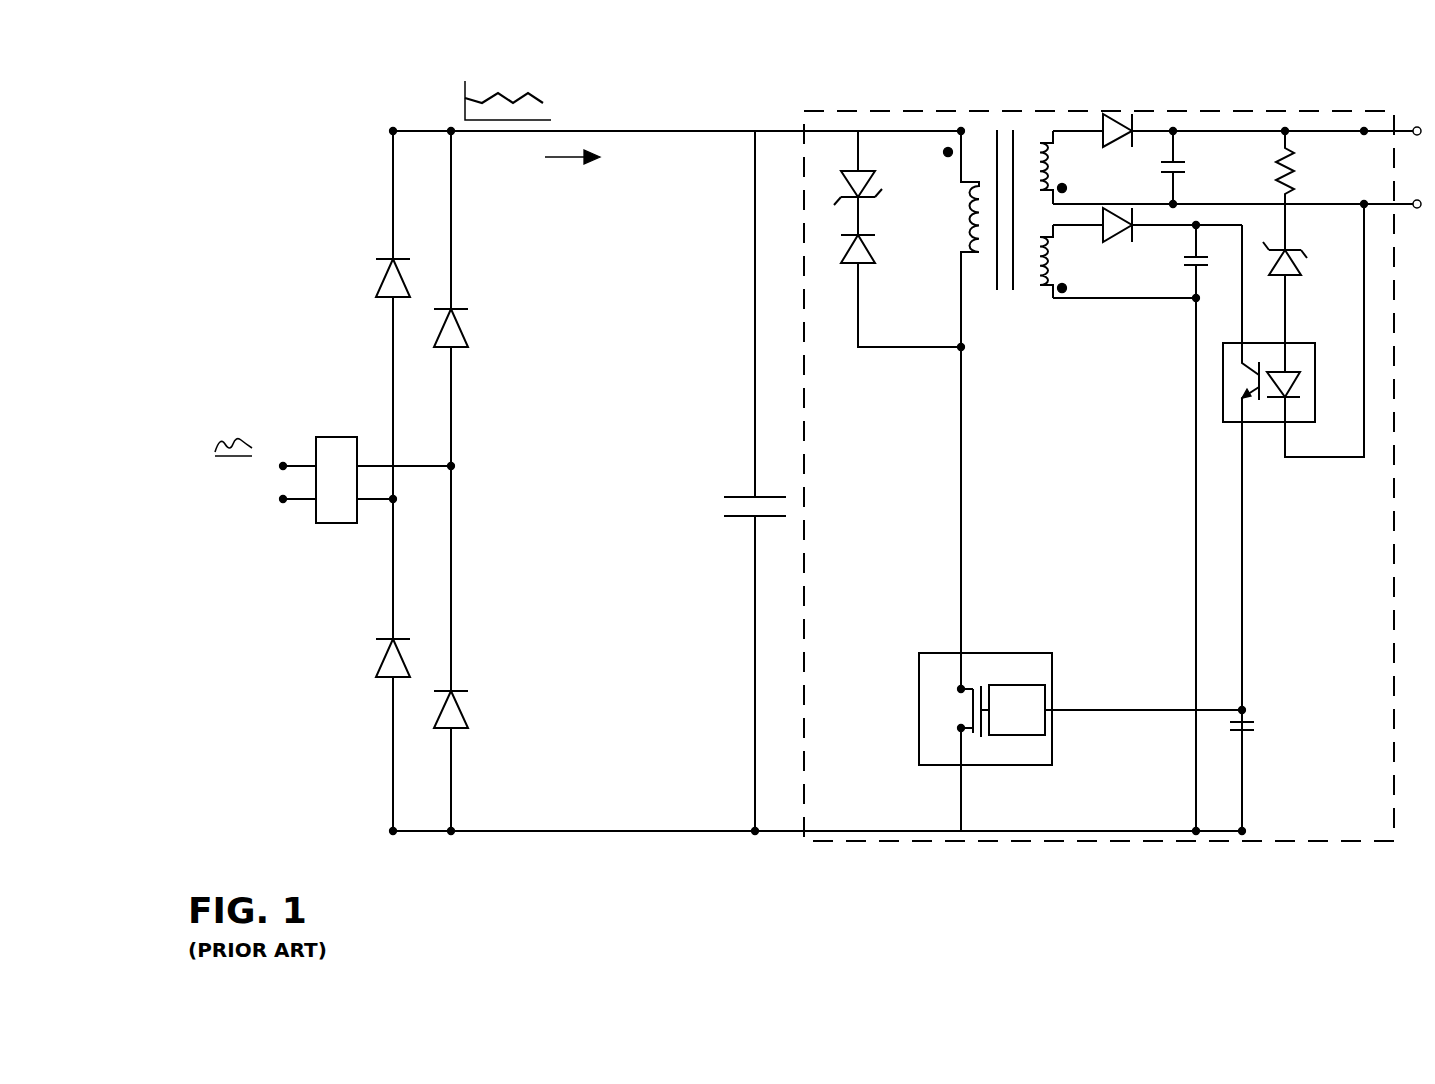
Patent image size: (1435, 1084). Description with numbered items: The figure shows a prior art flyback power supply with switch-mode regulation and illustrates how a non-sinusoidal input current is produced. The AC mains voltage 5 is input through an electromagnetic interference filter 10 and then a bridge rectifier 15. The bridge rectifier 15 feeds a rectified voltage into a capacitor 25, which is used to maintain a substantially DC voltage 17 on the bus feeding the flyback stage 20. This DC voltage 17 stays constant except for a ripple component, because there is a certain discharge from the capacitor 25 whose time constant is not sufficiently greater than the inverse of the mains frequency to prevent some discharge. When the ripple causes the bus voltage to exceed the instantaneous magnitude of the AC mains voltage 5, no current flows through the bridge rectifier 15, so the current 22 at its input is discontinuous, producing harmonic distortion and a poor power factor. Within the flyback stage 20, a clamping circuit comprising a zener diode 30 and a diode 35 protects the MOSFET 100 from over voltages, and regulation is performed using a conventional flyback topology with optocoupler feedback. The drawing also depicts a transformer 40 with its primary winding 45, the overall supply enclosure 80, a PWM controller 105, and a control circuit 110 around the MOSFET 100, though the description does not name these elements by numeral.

The AC mains voltage 5 is at (265, 456).
The electromagnetic interference (EMI) filter 10 is at (385, 480).
The bridge rectifier 15 is at (378, 860).
The DC voltage 17 is at (493, 96).
The flyback stage 20 is at (1355, 857).
The current 22 is at (572, 175).
The capacitor 25 is at (732, 481).
The zener diode 30 is at (845, 183).
The diode 35 is at (886, 293).
The transformer 40 is at (996, 386).
The primary winding 45 is at (952, 410).
The switching power supply 80 is at (1395, 518).
The MOSFET 100 is at (956, 759).
The PWM controller 105 is at (1115, 696).
The control circuit 110 is at (1014, 653).